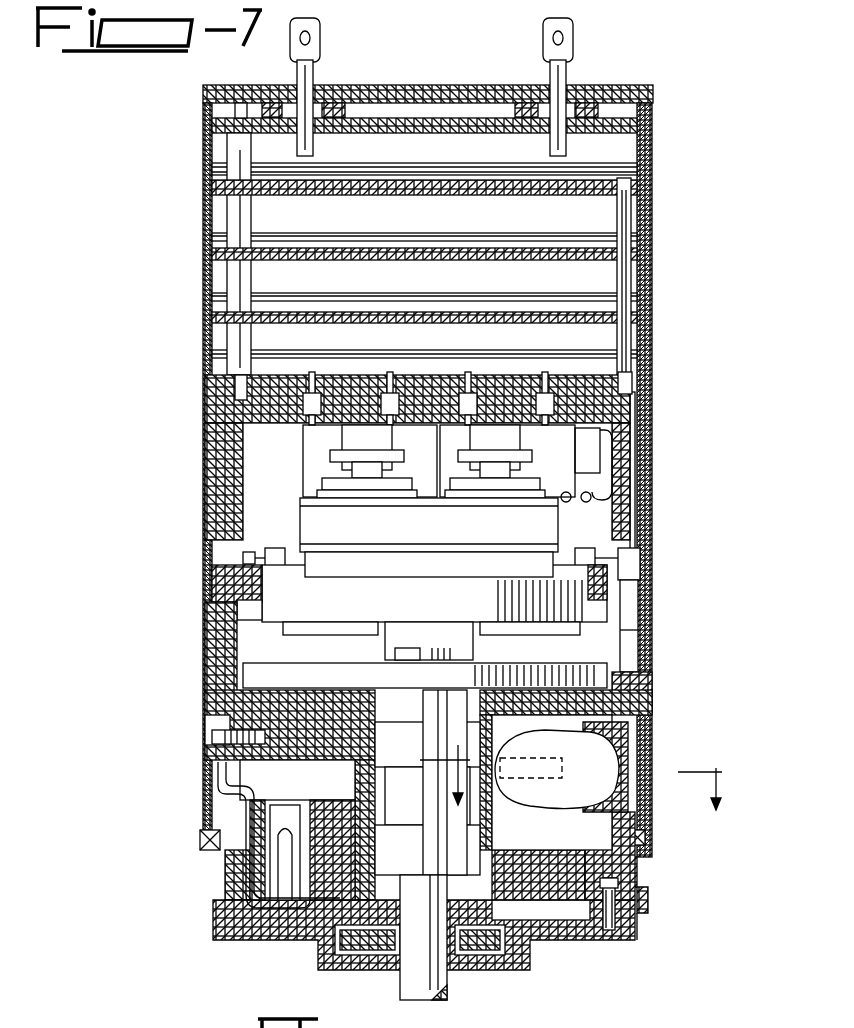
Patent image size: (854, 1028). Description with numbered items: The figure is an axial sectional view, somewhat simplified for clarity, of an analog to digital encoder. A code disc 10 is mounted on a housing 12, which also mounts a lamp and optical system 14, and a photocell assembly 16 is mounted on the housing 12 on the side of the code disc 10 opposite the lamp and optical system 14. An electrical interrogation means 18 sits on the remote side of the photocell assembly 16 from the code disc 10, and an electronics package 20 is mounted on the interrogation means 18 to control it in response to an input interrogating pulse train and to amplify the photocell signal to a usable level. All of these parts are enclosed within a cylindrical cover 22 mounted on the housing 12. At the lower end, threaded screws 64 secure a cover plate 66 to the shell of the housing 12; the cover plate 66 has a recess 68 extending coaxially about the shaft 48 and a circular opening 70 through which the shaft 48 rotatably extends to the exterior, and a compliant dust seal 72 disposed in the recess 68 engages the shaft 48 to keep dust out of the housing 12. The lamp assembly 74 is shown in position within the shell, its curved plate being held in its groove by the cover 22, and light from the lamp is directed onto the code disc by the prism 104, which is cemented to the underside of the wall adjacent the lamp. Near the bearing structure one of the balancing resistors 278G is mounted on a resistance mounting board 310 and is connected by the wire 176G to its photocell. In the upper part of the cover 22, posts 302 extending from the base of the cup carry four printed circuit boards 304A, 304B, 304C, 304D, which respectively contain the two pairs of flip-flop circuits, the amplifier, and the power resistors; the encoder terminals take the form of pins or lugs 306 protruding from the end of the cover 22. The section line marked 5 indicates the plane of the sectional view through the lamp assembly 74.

The code disc 10 is at (533, 675).
The housing 12 is at (213, 903).
The lamp and optical system 14 is at (604, 770).
The photocell assembly 16 is at (282, 607).
The electrical interrogation means 18 is at (232, 445).
The electronics package 20 is at (220, 202).
The cylindrical cover 22 is at (657, 492).
The shaft 48 is at (410, 992).
The threaded screws 64 is at (652, 900).
The cover plate 66 is at (566, 935).
The recess 68 is at (362, 965).
The circular opening 70 is at (400, 965).
The dust seal 72 is at (320, 953).
The lamp assembly 74 is at (641, 750).
The prism 104 is at (553, 779).
The wire 176G is at (256, 845).
The balancing resistor 278G is at (290, 870).
The posts 302 is at (627, 220).
The printed circuit board 304A is at (650, 324).
The printed circuit board 304B is at (650, 258).
The printed circuit board 304C is at (650, 191).
The printed circuit board 304D is at (650, 131).
The pins or lugs 306 is at (320, 44).
The resistance mounting board 310 is at (335, 782).
The section line 5- 5 is at (585, 771).